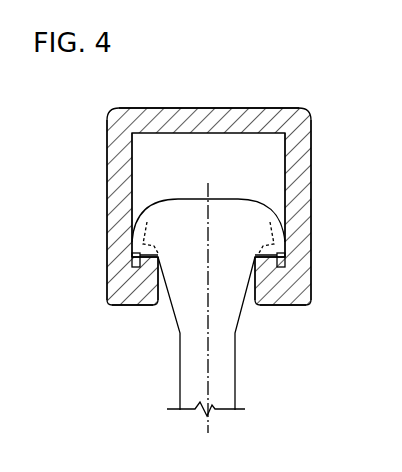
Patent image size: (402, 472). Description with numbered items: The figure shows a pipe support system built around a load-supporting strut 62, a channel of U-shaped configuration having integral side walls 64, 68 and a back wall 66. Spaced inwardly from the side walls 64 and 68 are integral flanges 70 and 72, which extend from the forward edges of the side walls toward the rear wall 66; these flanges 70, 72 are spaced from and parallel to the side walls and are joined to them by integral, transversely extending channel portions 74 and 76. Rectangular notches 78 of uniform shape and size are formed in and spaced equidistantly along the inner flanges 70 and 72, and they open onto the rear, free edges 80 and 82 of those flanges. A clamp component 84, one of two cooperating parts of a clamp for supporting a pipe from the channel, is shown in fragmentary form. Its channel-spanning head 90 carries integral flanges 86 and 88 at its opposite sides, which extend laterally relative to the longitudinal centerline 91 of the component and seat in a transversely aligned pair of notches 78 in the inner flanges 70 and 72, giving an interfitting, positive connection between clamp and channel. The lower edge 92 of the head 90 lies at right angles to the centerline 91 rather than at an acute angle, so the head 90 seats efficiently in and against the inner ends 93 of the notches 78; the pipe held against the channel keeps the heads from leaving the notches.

The strut 62 is at (186, 98).
The side wall 64 is at (107, 158).
The back wall 66 is at (240, 108).
The side wall 68 is at (311, 162).
The flange 70 is at (143, 262).
The flange 72 is at (286, 258).
The channel portion 74 is at (137, 310).
The channel portion 76 is at (283, 310).
The notch 78 is at (136, 254).
The free edge 80 is at (156, 232).
The free edge 82 is at (262, 232).
The clamp component 84 is at (177, 371).
The flange 86 is at (133, 238).
The flange 88 is at (287, 243).
The head 90 is at (223, 188).
The longitudinal centerline 91 is at (212, 423).
The lower edge 92 is at (282, 265).
The inner end 93 is at (155, 256).